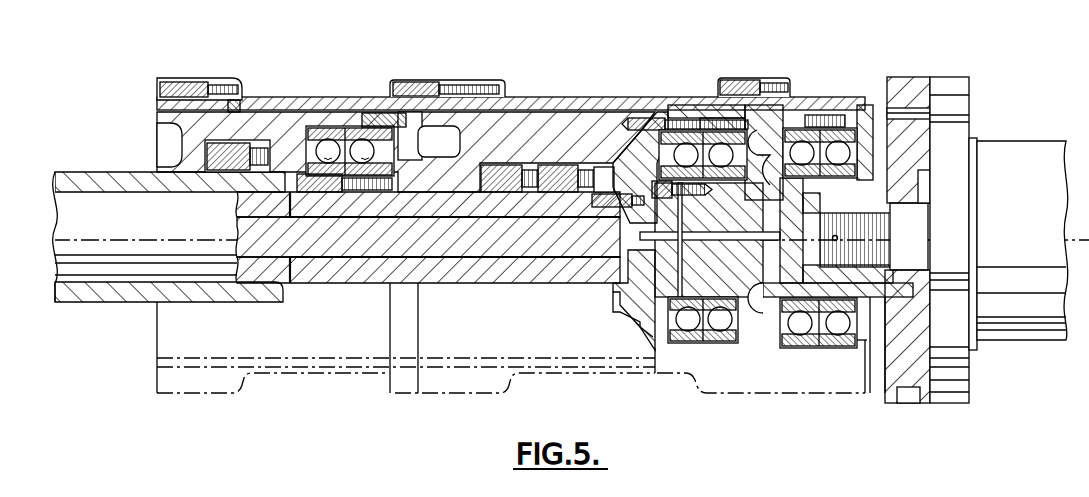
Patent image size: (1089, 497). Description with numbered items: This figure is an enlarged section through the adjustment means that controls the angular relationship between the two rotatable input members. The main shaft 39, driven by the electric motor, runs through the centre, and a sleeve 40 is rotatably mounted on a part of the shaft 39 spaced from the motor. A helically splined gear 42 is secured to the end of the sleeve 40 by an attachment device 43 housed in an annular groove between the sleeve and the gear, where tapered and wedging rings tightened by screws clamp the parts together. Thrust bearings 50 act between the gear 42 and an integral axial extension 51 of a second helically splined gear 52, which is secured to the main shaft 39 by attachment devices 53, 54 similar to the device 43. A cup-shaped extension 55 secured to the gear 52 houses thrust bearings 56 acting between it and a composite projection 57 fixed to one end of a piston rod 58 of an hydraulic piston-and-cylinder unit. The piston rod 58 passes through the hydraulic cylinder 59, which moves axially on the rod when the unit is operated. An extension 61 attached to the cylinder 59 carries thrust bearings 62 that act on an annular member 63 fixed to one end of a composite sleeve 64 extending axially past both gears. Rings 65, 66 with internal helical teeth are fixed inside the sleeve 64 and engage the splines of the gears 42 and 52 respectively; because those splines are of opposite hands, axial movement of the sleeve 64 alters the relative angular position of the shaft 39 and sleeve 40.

The main shaft 39 is at (343, 275).
The sleeve 40 is at (92, 289).
The helically splined gear 42 is at (292, 128).
The attachment device 43 is at (233, 144).
The thrust bearings 50 is at (358, 137).
The axial extension 51 is at (375, 187).
The second helically splined gear 52 is at (540, 140).
The attachment device 53 is at (507, 188).
The attachment device 54 is at (557, 190).
The cup-shaped extension 55 is at (638, 157).
The thrust bearings 56 is at (716, 335).
The composite projection 57 is at (748, 272).
The piston rod 58 is at (870, 230).
The hydraulic cylinder 59 is at (1010, 168).
The extension 61 is at (890, 170).
The thrust bearings 62 is at (812, 148).
The annular member 63 is at (792, 148).
The composite sleeve 64 is at (235, 108).
The ring 65 is at (175, 88).
The ring 66 is at (420, 108).